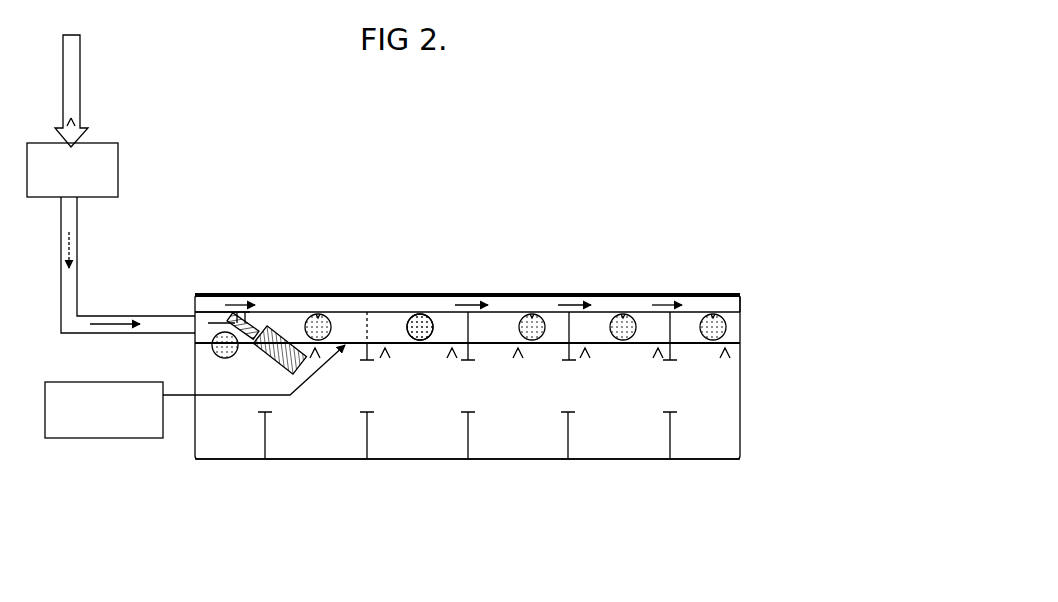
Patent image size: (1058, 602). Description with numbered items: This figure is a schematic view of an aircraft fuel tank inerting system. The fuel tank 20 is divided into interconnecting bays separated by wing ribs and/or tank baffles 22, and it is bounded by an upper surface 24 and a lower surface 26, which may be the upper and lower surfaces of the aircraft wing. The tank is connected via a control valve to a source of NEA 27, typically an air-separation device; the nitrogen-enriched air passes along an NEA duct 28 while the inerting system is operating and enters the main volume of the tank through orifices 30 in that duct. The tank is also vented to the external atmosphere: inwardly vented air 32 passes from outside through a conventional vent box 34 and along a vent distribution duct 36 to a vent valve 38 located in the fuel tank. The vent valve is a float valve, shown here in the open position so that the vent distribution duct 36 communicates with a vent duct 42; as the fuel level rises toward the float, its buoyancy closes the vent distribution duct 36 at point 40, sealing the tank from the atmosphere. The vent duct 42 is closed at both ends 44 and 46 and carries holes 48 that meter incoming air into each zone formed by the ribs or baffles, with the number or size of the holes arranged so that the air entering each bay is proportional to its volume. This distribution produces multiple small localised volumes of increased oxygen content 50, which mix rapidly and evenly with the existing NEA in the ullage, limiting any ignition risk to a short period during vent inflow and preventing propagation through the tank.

The fuel tank 20 is at (712, 463).
The wing ribs and/or tank baffles 22 is at (575, 421).
The upper surface 24 is at (262, 291).
The lower surface 26 is at (222, 463).
The source of NEA 27 is at (99, 444).
The NEA duct 28 is at (495, 349).
The orifices 30 is at (450, 359).
The inwardly vented air 32 is at (75, 86).
The vent box 34 is at (88, 180).
The vent distribution duct 36 is at (69, 276).
The vent valve 38 is at (278, 322).
The point 40 is at (239, 304).
The vent duct 42 is at (510, 293).
The end 44 is at (190, 302).
The end 46 is at (742, 306).
The holes 48 is at (414, 308).
The localised volumes of increased oxygen content 50 is at (428, 311).